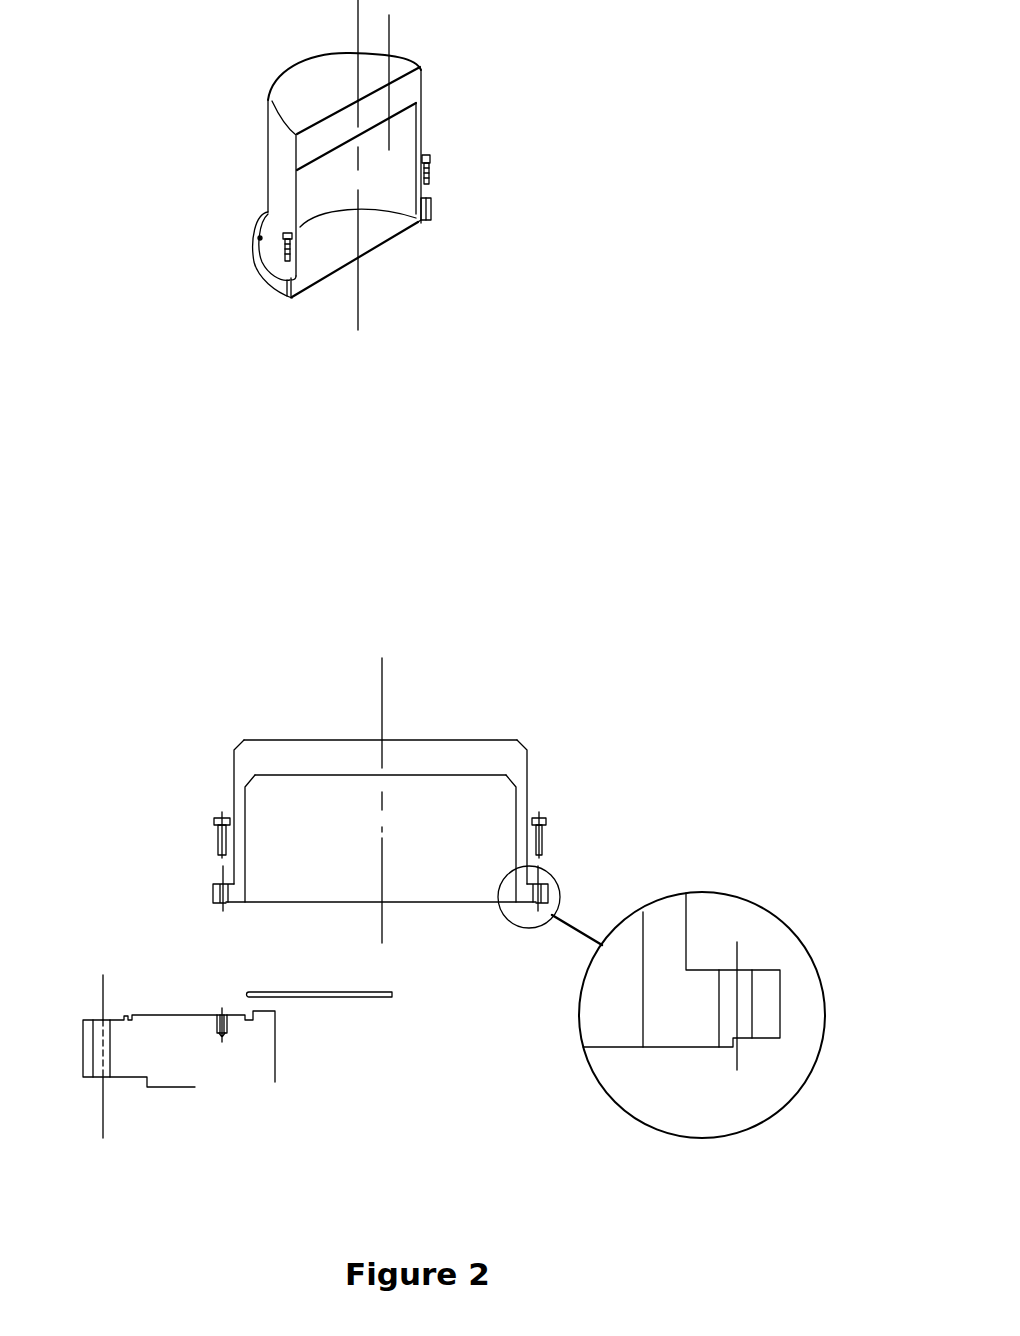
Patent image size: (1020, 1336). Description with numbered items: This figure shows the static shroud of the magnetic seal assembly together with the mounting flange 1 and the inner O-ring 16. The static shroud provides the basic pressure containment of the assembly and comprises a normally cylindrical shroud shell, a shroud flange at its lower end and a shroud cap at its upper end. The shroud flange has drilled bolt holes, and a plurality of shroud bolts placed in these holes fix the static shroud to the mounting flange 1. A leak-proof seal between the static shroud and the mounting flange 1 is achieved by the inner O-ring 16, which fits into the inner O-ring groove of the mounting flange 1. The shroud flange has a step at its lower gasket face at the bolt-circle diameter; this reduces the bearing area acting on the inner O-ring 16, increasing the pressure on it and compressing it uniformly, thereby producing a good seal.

The mounting flange 1 is at (188, 1015).
The inner O-ring 16 is at (245, 995).